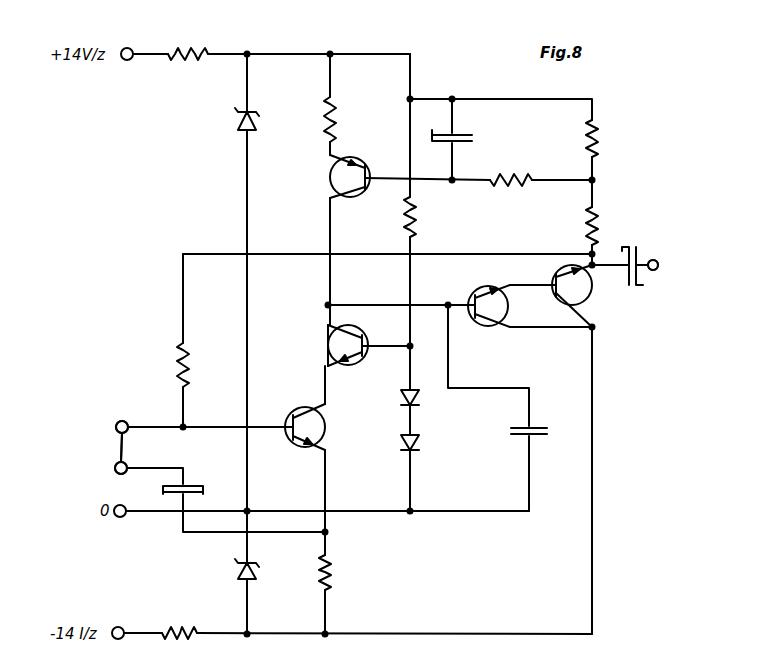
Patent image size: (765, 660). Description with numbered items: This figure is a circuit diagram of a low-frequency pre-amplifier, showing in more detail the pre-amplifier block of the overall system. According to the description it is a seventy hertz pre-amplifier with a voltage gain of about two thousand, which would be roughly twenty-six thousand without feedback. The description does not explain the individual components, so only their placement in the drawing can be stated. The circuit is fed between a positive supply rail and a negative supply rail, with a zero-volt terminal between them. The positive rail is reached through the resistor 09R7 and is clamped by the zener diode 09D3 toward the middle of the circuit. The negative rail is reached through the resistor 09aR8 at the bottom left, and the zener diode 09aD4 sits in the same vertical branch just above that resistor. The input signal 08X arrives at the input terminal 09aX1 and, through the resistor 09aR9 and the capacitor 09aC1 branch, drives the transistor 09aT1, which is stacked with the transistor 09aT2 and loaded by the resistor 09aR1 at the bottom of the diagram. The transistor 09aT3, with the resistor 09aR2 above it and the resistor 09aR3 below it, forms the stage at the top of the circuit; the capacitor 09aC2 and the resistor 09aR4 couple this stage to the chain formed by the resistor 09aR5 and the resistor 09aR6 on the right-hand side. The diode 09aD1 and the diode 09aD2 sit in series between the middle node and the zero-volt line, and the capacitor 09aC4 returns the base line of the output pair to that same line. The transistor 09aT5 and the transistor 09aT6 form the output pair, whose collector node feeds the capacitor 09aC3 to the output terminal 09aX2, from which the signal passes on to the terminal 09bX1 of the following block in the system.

The resistor 09R7 is at (208, 50).
The zener diode 09D3 is at (236, 122).
The resistor 09aR2 is at (356, 119).
The transistor 09aT3 is at (328, 176).
The resistor 09aR3 is at (406, 216).
The capacitor 09aC2 is at (466, 138).
The resistor 09aR4 is at (532, 172).
The resistor 09aR5 is at (598, 150).
The resistor 09aR6 is at (587, 219).
The capacitor 09aC3 is at (626, 246).
The output terminal 09aX2 is at (702, 253).
The input terminal of next stage 09bX1 is at (640, 285).
The transistor 09aT6 is at (588, 292).
The transistor 09aT5 is at (502, 316).
The transistor 09aT2 is at (328, 342).
The resistor 09aR9 is at (177, 365).
The input signal terminal 08X is at (84, 428).
The input terminal 09aX1 is at (97, 453).
The transistor 09aT1 is at (316, 441).
The capacitor 09aC1 is at (194, 482).
The diode 09aD1 is at (420, 400).
The diode 09aD2 is at (421, 444).
The capacitor 09aC4 is at (556, 430).
The zener diode 09aD4 is at (234, 572).
The resistor 09aR1 is at (326, 586).
The resistor 09aR8 is at (210, 620).